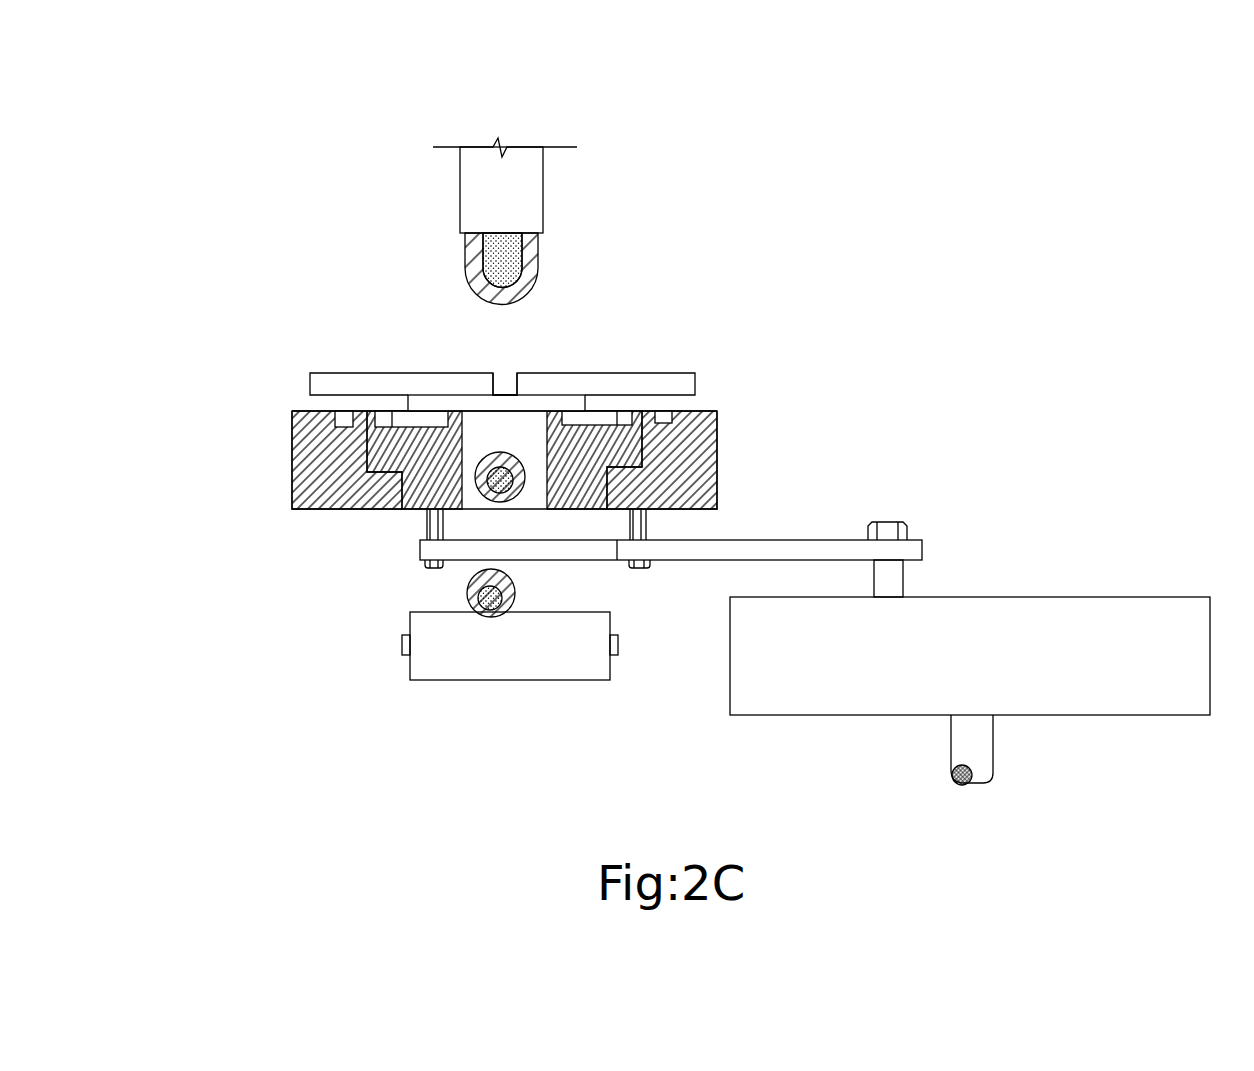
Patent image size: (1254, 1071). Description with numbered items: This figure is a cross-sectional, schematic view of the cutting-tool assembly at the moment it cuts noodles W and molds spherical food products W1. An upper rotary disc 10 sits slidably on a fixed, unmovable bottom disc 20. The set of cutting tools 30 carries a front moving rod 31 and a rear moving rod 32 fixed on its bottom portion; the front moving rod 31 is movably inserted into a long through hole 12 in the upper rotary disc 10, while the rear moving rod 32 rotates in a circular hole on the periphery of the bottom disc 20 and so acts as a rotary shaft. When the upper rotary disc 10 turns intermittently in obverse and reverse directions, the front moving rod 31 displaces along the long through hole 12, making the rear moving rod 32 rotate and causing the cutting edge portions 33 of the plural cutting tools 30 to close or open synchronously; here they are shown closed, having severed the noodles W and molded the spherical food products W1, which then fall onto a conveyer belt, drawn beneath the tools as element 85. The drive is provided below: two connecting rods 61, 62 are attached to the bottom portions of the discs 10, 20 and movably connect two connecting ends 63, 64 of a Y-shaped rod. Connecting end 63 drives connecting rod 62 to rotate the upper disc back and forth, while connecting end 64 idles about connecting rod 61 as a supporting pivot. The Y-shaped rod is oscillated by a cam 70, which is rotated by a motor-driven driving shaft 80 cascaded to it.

The noodles W is at (527, 252).
The spherical food products W1 is at (499, 492).
The upper rotary disc 10 is at (565, 445).
The long through hole 12 is at (405, 417).
The bottom disc 20 is at (312, 478).
The set of cutting tools 30 is at (338, 392).
The front moving rod 31 is at (367, 430).
The rear moving rod 32 is at (307, 414).
The cutting edge portions 33 is at (493, 377).
The connecting rod 61 is at (647, 522).
The connecting rod 62 is at (428, 525).
The connecting end 63 is at (422, 563).
The connecting end 64 is at (640, 555).
The cam 70 is at (1123, 683).
The driving shaft 80 is at (969, 743).
The lower block 85 is at (485, 667).